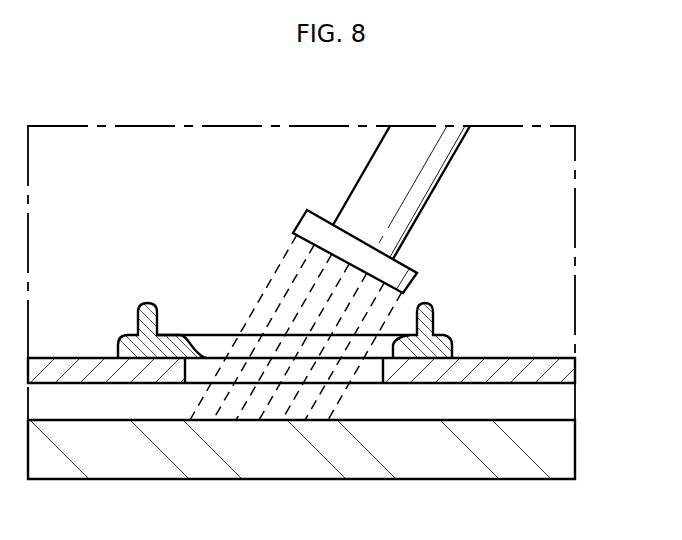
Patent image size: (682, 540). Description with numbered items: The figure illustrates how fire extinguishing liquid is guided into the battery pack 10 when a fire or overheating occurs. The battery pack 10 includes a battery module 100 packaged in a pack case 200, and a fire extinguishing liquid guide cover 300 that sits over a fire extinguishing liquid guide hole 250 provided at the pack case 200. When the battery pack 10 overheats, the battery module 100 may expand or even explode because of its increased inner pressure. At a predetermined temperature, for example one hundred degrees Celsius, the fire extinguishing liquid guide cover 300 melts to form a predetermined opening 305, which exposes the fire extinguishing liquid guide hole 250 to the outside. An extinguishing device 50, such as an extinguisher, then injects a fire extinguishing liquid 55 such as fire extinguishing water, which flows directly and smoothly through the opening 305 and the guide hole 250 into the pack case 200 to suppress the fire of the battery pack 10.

The battery pack 10 is at (105, 327).
The extinguishing device 50 is at (412, 148).
The fire extinguishing liquid 55 is at (392, 308).
The battery module 100 is at (558, 449).
The pack case 200 is at (558, 372).
The fire extinguishing liquid guide hole 250 is at (383, 385).
The fire extinguishing liquid guide cover 300 is at (440, 347).
The opening 305 is at (206, 349).